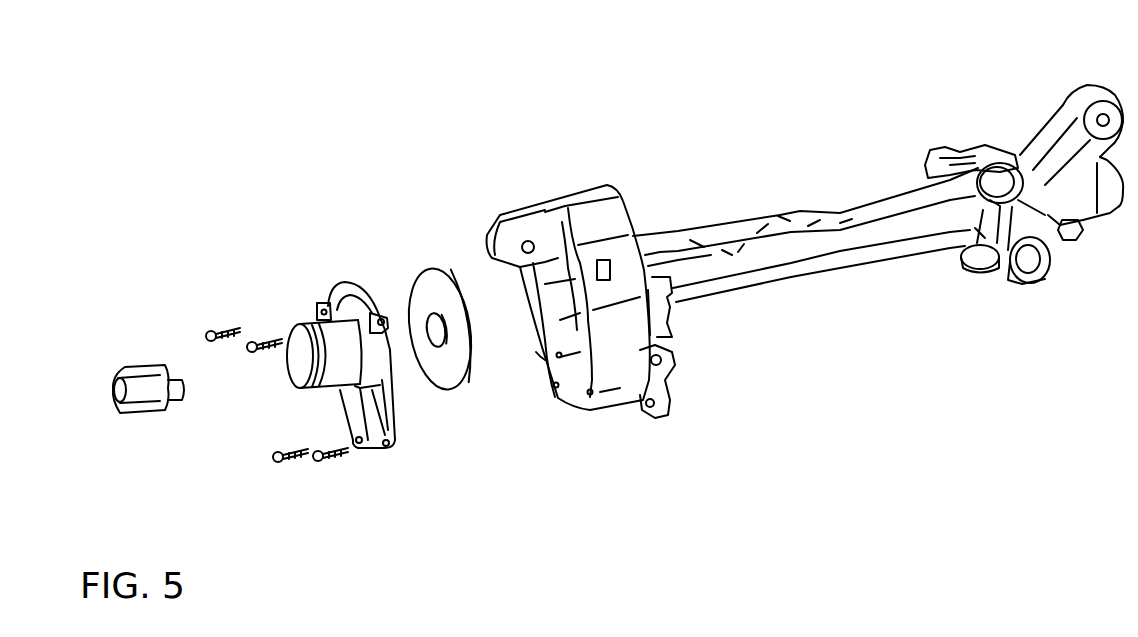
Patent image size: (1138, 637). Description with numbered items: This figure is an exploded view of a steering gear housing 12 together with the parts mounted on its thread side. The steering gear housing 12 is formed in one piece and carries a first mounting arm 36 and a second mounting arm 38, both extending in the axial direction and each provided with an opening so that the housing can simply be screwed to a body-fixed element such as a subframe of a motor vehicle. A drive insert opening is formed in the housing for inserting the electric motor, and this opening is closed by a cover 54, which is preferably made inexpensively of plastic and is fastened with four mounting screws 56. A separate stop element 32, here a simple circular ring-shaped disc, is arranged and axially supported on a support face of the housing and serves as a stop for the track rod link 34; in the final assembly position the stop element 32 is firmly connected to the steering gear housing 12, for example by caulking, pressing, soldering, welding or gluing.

The steering gear housing 12 is at (782, 140).
The stop element 32 is at (430, 284).
The track rod link 34 is at (142, 381).
The first mounting arm 36 is at (544, 226).
The second mounting arm 38 is at (540, 358).
The cover 54 is at (347, 304).
The mounting screws 56 is at (264, 340).